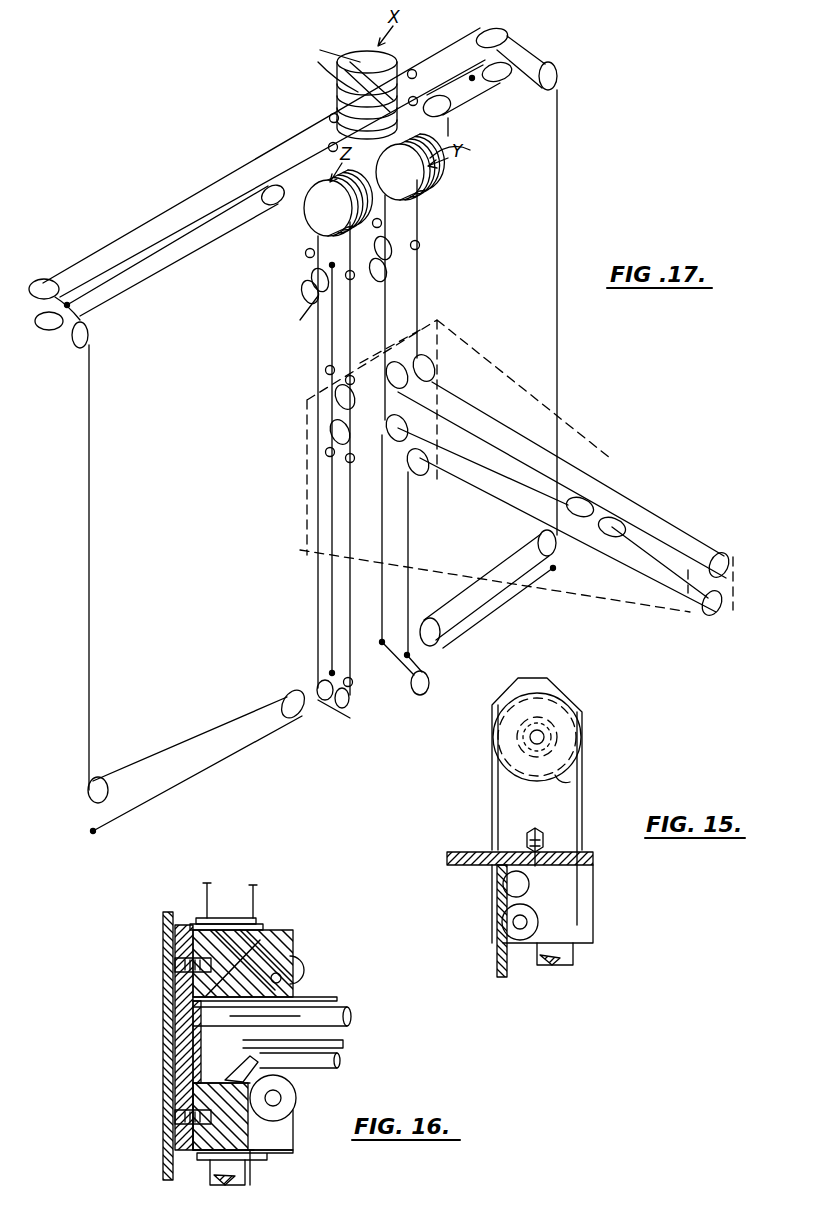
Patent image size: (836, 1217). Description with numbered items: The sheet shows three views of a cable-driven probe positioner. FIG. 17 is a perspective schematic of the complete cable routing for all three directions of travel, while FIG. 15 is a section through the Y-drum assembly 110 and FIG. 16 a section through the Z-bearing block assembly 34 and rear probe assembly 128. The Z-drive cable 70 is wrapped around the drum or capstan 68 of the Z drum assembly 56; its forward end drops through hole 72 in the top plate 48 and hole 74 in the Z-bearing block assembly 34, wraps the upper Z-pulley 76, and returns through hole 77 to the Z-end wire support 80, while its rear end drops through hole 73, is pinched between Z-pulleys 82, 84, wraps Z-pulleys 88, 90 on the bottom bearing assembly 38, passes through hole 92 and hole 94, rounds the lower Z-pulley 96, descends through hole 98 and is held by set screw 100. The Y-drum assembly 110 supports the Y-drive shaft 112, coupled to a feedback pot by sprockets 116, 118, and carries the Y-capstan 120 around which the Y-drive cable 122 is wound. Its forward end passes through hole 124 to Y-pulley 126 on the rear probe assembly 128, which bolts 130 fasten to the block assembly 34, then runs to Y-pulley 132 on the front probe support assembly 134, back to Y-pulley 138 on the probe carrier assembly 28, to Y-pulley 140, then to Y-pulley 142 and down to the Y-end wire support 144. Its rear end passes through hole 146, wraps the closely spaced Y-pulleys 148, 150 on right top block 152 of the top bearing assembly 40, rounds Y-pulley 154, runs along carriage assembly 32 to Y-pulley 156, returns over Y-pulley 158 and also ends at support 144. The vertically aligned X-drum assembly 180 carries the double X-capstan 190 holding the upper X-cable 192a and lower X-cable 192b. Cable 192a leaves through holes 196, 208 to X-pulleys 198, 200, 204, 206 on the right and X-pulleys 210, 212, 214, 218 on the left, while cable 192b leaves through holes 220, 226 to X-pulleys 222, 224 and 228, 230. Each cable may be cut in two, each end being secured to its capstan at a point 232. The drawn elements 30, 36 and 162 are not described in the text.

In FIG. 17, the probe carrier assembly 28 is at (660, 520).
In FIG. 16, the rod 30 is at (348, 1024).
In FIG. 17, the carriage assembly 32 is at (632, 620).
In FIG. 17, the Z-bearing block assembly 34 is at (298, 542).
In FIG. 16, the Z-bearing block assembly 34 is at (306, 928).
In FIG. 15, the tab 36 is at (552, 966).
In FIG. 16, the tab 36 is at (212, 1176).
In FIG. 17, the bottom bearing assembly 38 is at (310, 742).
In FIG. 17, the top bearing assembly 40 is at (497, 229).
In FIG. 15, the top bearing assembly 40 is at (620, 904).
In FIG. 15, the top plate 48 is at (450, 866).
In FIG. 17, the Z drum assembly 56 is at (295, 184).
In FIG. 17, the drum or capstan 68 is at (310, 222).
In FIG. 17, the Z-drive cable 70 is at (318, 344).
In FIG. 17, the hole 72 is at (348, 270).
In FIG. 17, the hole 73 is at (306, 258).
In FIG. 17, the hole 74 is at (355, 382).
In FIG. 17, the upper Z-pulley 76 is at (338, 402).
In FIG. 17, the hole 77 is at (325, 370).
In FIG. 17, the Z-end wire support 80 is at (302, 290).
In FIG. 15, the Z-end wire support 80 is at (548, 842).
In FIG. 17, the Z-pulley 82 is at (312, 284).
In FIG. 17, the Z-pulley 84 is at (312, 302).
In FIG. 17, the Z-pulley 88 is at (328, 702).
In FIG. 17, the Z-pulley 90 is at (346, 708).
In FIG. 17, the hole 92 is at (352, 686).
In FIG. 17, the hole 94 is at (354, 462).
In FIG. 17, the lower Z-pulley 96 is at (348, 432).
In FIG. 17, the hole 98 is at (326, 455).
In FIG. 17, the set screw 100 is at (330, 670).
In FIG. 17, the Y-drum assembly 110 is at (441, 202).
In FIG. 15, the Y-drum assembly 110 is at (601, 708).
In FIG. 15, the Y-drive shaft 112 is at (500, 738).
In FIG. 15, the sprocket 116 is at (560, 688).
In FIG. 15, the sprocket 118 is at (546, 737).
In FIG. 17, the Y-capstan 120 is at (430, 178).
In FIG. 15, the Y-capstan 120 is at (578, 782).
In FIG. 17, the Y-drive cable 122 is at (412, 300).
In FIG. 15, the Y-drive cable 122 is at (575, 802).
In FIG. 16, the Y-drive cable 122 is at (250, 884).
In FIG. 17, the hole 124 is at (420, 248).
In FIG. 15, the hole 124 is at (596, 858).
In FIG. 17, the Y-pulley 126 is at (436, 370).
In FIG. 16, the Y-pulley 126 is at (300, 976).
In FIG. 16, the rear probe assembly 128 is at (294, 946).
In FIG. 16, the bolts 130 is at (175, 965).
In FIG. 17, the Y-pulley 132 is at (729, 562).
In FIG. 17, the front probe support assembly 134 is at (724, 600).
In FIG. 17, the Y-pulley 138 is at (625, 520).
In FIG. 17, the Y-pulley 140 is at (714, 616).
In FIG. 17, the Y-pulley 142 is at (424, 474).
In FIG. 16, the Y-pulley 142 is at (296, 1108).
In FIG. 17, the Y-end wire support 144 is at (425, 688).
In FIG. 17, the hole 146 is at (382, 224).
In FIG. 15, the hole 146 is at (490, 868).
In FIG. 17, the Y-pulley 148 is at (392, 262).
In FIG. 15, the Y-pulley 148 is at (529, 886).
In FIG. 17, the Y-pulley 150 is at (372, 284).
In FIG. 15, the Y-pulley 150 is at (522, 942).
In FIG. 15, the right top block 152 is at (594, 935).
In FIG. 17, the Y-pulley 154 is at (396, 418).
In FIG. 16, the Y-pulley 154 is at (192, 1000).
In FIG. 17, the Y-pulley 156 is at (590, 500).
In FIG. 17, the Y-pulley 158 is at (440, 412).
In FIG. 16, the Y-pulley 158 is at (300, 1076).
In FIG. 15, the wall 162 is at (500, 972).
In FIG. 16, the wall 162 is at (165, 1165).
In FIG. 17, the X-drum assembly 180 is at (345, 52).
In FIG. 17, the X-capstan 190 is at (362, 50).
In FIG. 17, the upper X-cable 192a is at (472, 40).
In FIG. 17, the lower X-cable 192b is at (462, 70).
In FIG. 17, the hole 196 is at (413, 68).
In FIG. 17, the X-pulley 198 is at (506, 37).
In FIG. 17, the X-pulley 200 is at (557, 76).
In FIG. 17, the X-pulley 204 is at (538, 543).
In FIG. 17, the X-pulley 206 is at (436, 618).
In FIG. 17, the hole 208 is at (328, 118).
In FIG. 17, the X-pulley 210 is at (40, 282).
In FIG. 17, the X-pulley 212 is at (89, 337).
In FIG. 17, the X-pulley 214 is at (108, 778).
In FIG. 17, the X-pulley 218 is at (282, 706).
In FIG. 17, the hole 220 is at (452, 126).
In FIG. 17, the X-pulley 222 is at (509, 78).
In FIG. 17, the X-pulley 224 is at (452, 108).
In FIG. 17, the hole 226 is at (327, 147).
In FIG. 17, the X-pulley 228 is at (46, 332).
In FIG. 17, the X-pulley 230 is at (262, 205).
In FIG. 17, the point 232 is at (340, 44).